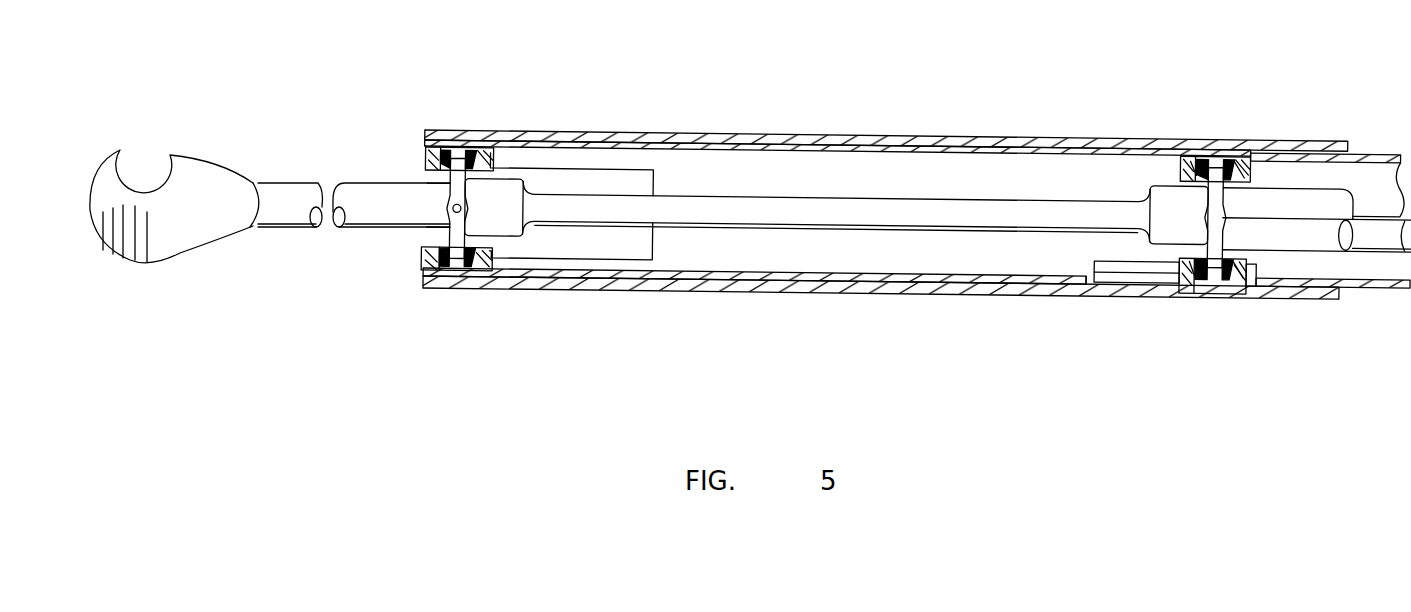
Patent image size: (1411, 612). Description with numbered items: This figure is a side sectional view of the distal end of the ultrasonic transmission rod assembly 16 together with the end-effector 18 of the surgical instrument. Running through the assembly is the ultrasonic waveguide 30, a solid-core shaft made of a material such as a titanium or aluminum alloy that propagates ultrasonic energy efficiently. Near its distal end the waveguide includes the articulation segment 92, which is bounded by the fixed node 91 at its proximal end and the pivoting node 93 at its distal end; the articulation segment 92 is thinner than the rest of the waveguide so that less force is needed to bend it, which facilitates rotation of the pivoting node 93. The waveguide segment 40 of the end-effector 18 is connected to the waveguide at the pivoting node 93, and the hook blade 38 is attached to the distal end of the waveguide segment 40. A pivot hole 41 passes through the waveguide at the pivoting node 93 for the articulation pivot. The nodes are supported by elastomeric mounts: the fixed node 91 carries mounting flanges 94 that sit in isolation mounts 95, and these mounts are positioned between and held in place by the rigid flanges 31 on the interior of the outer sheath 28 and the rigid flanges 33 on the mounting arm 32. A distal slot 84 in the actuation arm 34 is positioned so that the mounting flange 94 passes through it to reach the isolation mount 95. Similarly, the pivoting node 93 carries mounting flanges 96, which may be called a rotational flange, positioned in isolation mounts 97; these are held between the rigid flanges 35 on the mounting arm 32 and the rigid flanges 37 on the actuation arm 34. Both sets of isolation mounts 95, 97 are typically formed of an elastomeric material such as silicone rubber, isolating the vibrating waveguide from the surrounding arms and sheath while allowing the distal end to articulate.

The ultrasonic transmission rod assembly 16 is at (717, 85).
The ultrasonic end-effector 18 is at (232, 122).
The outer sheath 28 is at (882, 219).
The ultrasonic waveguide 30 is at (1327, 185).
The rigid flanges 31 is at (1217, 276).
The mounting arm 32 is at (886, 140).
The rigid flanges 33 is at (1215, 169).
The actuation arm 34 is at (916, 278).
The rigid flanges 35 is at (459, 159).
The rigid flanges 37 is at (456, 259).
The hook blade 38 is at (190, 235).
The waveguide segment 40 is at (353, 195).
The pivot hole 41 is at (457, 208).
The distal slot 84 is at (1132, 273).
The fixed node 91 is at (1307, 219).
The articulation segment 92 is at (836, 209).
The pivoting node 93 is at (439, 205).
The mounting flanges 94 is at (1214, 219).
The isolation mounts 95 is at (1216, 219).
The mounting flanges 96 is at (457, 208).
The isolation mounts 97 is at (457, 208).